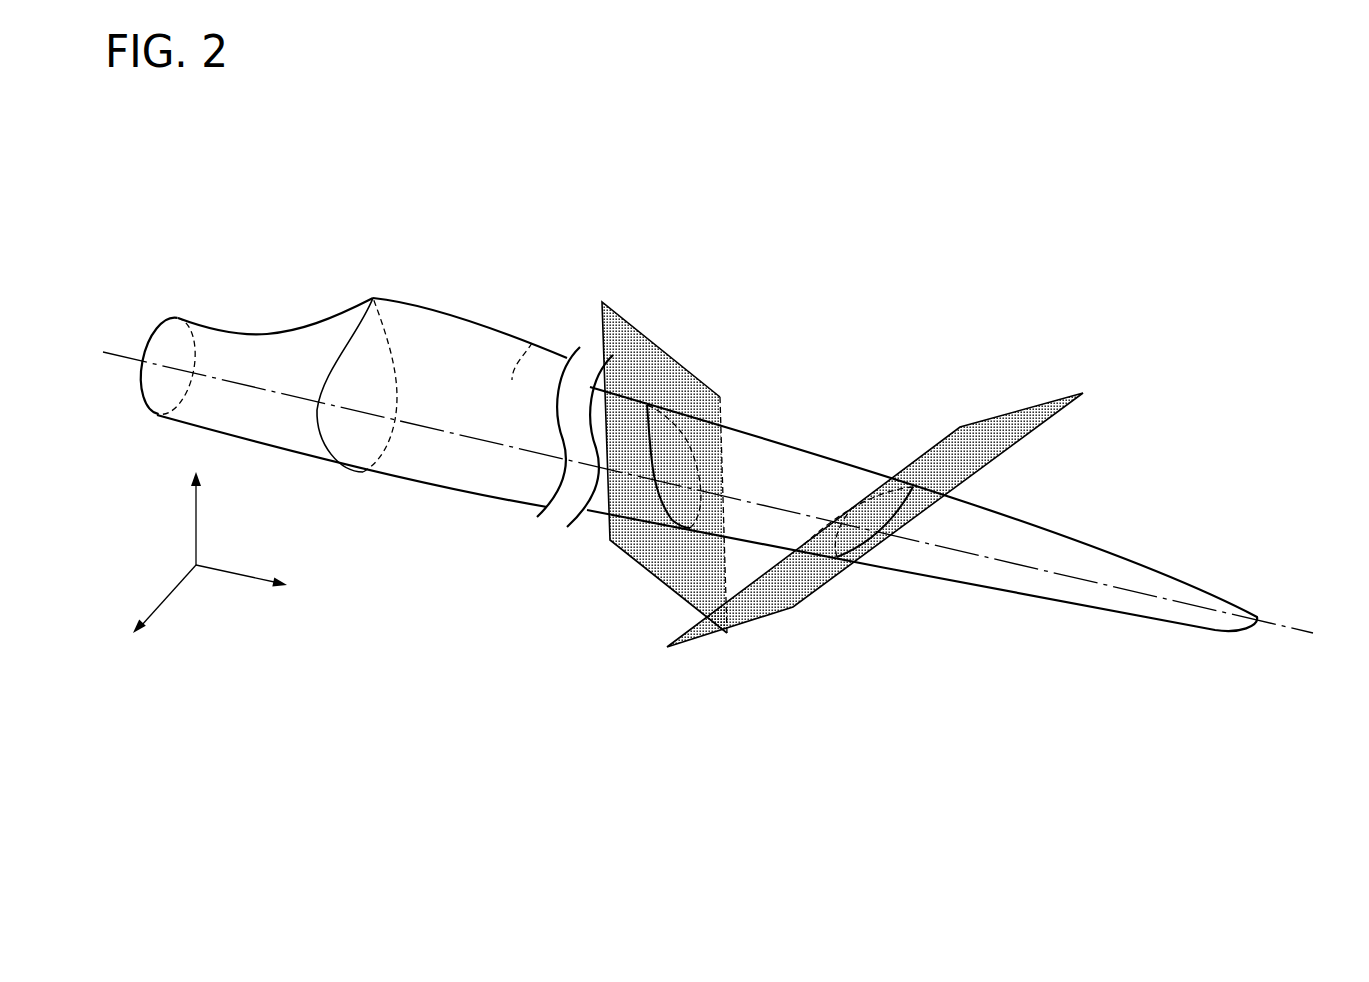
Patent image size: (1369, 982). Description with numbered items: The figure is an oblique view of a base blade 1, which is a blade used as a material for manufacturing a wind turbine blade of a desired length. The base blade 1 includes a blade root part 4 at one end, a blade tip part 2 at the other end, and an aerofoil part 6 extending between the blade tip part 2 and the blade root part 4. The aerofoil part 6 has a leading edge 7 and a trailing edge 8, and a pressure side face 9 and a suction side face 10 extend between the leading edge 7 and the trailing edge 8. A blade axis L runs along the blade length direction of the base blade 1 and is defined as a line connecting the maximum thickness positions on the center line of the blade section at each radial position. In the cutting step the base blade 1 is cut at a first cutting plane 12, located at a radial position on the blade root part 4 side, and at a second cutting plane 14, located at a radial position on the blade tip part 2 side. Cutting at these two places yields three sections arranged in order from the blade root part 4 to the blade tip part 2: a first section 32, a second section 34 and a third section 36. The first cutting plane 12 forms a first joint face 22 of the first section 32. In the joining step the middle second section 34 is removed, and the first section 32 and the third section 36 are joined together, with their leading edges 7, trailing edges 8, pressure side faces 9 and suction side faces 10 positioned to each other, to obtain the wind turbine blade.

The base blade 1 is at (402, 205).
The blade tip part 2 is at (1257, 620).
The blade root part 4 is at (178, 414).
The aerofoil part 6 is at (307, 443).
The leading edge 7 is at (433, 490).
The trailing edge 8 is at (475, 320).
The pressure side face 9 is at (400, 340).
The suction side face 10 is at (532, 343).
The first cutting plane 12 is at (677, 453).
The second cutting plane 14 is at (877, 513).
The first joint face 22 is at (773, 613).
The first section 32 is at (507, 502).
The second section 34 is at (793, 443).
The third section 36 is at (1075, 537).
The blade axis L is at (720, 504).